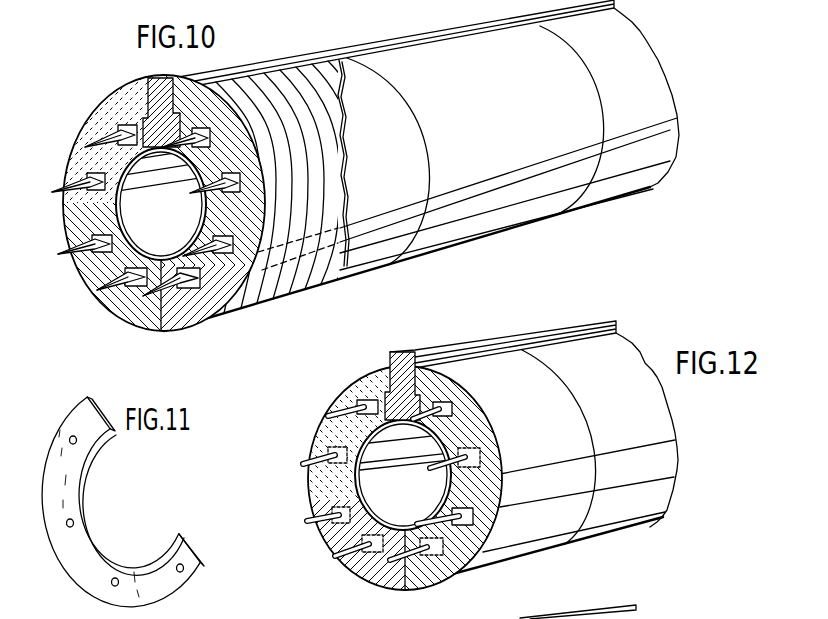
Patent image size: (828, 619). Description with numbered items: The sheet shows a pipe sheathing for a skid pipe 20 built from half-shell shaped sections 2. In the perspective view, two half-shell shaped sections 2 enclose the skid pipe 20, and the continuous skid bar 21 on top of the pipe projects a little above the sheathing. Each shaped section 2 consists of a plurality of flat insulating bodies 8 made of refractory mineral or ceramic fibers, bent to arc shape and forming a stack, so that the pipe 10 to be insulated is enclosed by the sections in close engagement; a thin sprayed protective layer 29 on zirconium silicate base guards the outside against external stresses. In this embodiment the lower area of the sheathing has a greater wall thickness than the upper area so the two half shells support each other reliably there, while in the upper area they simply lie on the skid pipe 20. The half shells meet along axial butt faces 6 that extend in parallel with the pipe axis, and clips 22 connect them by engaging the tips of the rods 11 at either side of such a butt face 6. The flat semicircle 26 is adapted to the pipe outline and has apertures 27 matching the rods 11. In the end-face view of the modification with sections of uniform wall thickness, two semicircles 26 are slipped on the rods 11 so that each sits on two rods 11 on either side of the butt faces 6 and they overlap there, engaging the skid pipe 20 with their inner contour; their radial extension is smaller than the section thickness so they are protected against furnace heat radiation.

In FIG. 10, the half-shell shaped section 2 is at (470, 242).
In FIG. 12, the half-shell shaped section 2 is at (493, 372).
In FIG. 10, the axial butt face 6 is at (140, 322).
In FIG. 12, the axial butt face 6 is at (378, 580).
In FIG. 10, the flat insulating body 8 is at (261, 307).
In FIG. 10, the pipe 10 is at (113, 217).
In FIG. 10, the rod 11 is at (93, 252).
In FIG. 12, the rod 11 is at (310, 472).
In FIG. 10, the skid pipe 20 is at (125, 257).
In FIG. 12, the skid pipe 20 is at (362, 443).
In FIG. 10, the skid bar 21 is at (156, 102).
In FIG. 12, the skid bar 21 is at (400, 366).
In FIG. 10, the clip 22 is at (153, 272).
In FIG. 11, the semicircle 26 is at (67, 508).
In FIG. 12, the semicircle 26 is at (330, 446).
In FIG. 11, the aperture 27 is at (77, 441).
In FIG. 10, the protective layer 29 is at (368, 257).